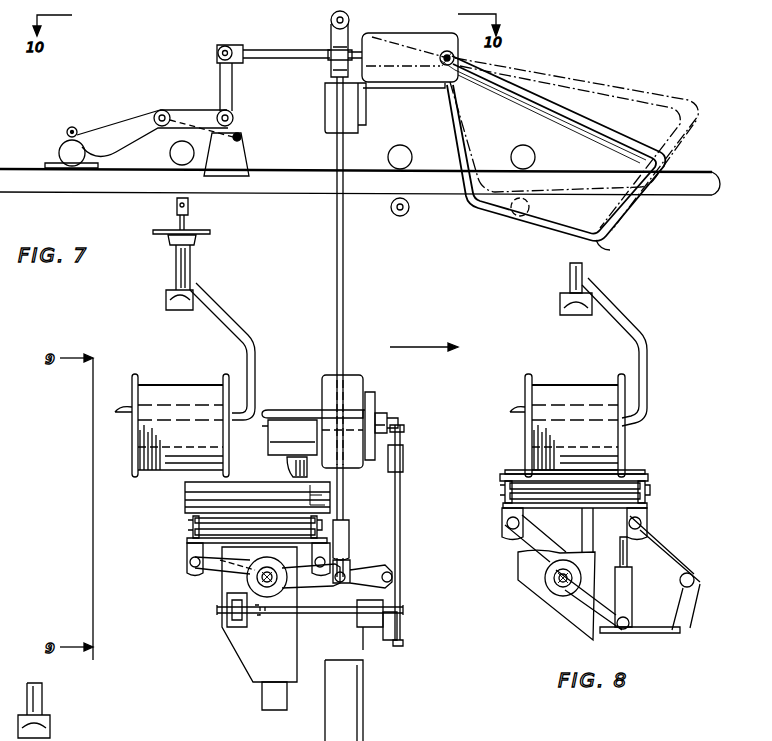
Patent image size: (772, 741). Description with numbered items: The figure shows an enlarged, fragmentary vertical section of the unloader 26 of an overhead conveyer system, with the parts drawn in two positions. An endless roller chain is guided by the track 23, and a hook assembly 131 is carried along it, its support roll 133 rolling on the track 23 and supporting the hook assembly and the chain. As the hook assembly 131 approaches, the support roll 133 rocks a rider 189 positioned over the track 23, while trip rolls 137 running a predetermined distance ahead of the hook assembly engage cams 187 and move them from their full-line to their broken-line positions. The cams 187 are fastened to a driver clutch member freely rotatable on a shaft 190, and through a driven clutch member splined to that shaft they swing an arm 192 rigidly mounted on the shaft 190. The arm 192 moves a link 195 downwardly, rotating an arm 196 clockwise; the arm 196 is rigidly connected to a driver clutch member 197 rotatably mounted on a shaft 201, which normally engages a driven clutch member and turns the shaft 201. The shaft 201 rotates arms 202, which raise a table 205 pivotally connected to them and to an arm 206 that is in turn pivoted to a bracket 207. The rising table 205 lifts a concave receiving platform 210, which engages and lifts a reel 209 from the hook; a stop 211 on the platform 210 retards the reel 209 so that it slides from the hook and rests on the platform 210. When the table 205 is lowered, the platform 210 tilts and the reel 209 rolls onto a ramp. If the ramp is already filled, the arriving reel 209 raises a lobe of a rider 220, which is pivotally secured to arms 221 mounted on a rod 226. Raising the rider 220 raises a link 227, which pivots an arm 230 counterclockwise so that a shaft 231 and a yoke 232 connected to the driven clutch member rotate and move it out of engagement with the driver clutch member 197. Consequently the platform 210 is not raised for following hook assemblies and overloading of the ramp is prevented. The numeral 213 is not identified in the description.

In FIG. 7, the track 23 is at (135, 191).
In FIG. 7, the unloader 26 is at (592, 68).
In FIG. 8, the unloader 26 is at (618, 285).
In FIG. 7, the second hook assembly 131 is at (212, 264).
In FIG. 7, the support roll 133 is at (170, 156).
In FIG. 7, the trip rolls 137 is at (404, 216).
In FIG. 7, the cams 187 is at (615, 125).
In FIG. 7, the rider 189 is at (128, 122).
In FIG. 7, the shaft 190 is at (444, 45).
In FIG. 7, the arm 192 is at (372, 45).
In FIG. 7, the link 195 is at (332, 40).
In FIG. 7, the arm 196 is at (318, 577).
In FIG. 7, the driver clutch member 197 is at (240, 571).
In FIG. 7, the shaft 201 is at (250, 577).
In FIG. 8, the shaft 201 is at (560, 585).
In FIG. 8, the arms 202 is at (528, 542).
In FIG. 7, the table 205 is at (190, 540).
In FIG. 8, the table 205 is at (650, 504).
In FIG. 8, the arm 206 is at (660, 552).
In FIG. 8, the bracket 207 is at (676, 592).
In FIG. 7, the reel 209 is at (138, 375).
In FIG. 8, the reel 209 is at (530, 375).
In FIG. 7, the concave receiving platform 210 is at (347, 512).
In FIG. 8, the concave receiving platform 210 is at (650, 477).
In FIG. 8, the stop 211 is at (625, 470).
In FIG. 7, the frame corner 213 is at (617, 248).
In FIG. 7, the rider 220 is at (300, 432).
In FIG. 7, the arms 221 is at (386, 414).
In FIG. 7, the rod 226 is at (279, 408).
In FIG. 7, the link 227 is at (401, 512).
In FIG. 7, the arm 230 is at (388, 646).
In FIG. 7, the shaft 231 is at (332, 618).
In FIG. 7, the yoke 232 is at (240, 622).